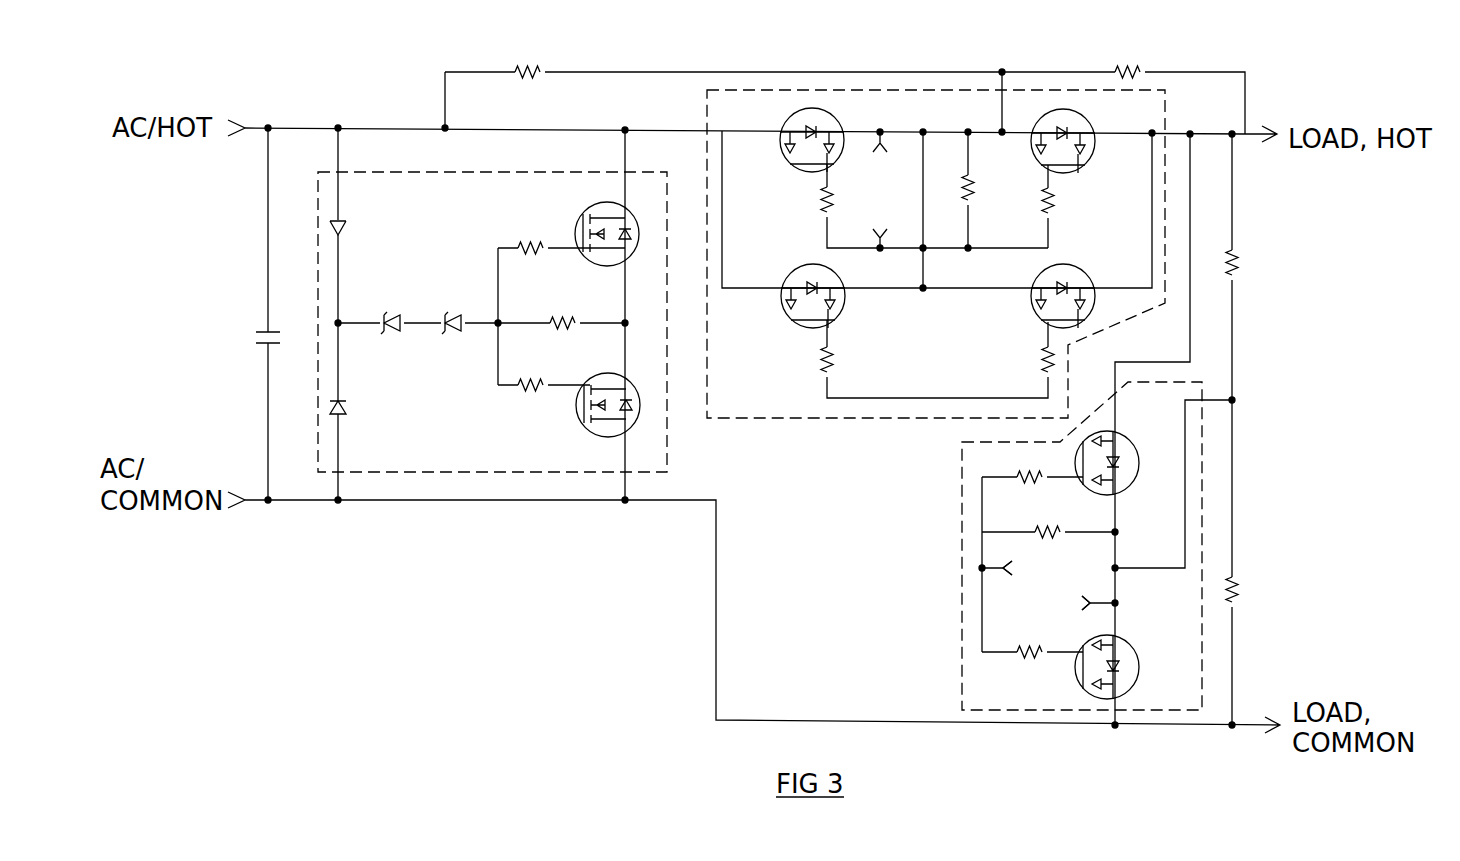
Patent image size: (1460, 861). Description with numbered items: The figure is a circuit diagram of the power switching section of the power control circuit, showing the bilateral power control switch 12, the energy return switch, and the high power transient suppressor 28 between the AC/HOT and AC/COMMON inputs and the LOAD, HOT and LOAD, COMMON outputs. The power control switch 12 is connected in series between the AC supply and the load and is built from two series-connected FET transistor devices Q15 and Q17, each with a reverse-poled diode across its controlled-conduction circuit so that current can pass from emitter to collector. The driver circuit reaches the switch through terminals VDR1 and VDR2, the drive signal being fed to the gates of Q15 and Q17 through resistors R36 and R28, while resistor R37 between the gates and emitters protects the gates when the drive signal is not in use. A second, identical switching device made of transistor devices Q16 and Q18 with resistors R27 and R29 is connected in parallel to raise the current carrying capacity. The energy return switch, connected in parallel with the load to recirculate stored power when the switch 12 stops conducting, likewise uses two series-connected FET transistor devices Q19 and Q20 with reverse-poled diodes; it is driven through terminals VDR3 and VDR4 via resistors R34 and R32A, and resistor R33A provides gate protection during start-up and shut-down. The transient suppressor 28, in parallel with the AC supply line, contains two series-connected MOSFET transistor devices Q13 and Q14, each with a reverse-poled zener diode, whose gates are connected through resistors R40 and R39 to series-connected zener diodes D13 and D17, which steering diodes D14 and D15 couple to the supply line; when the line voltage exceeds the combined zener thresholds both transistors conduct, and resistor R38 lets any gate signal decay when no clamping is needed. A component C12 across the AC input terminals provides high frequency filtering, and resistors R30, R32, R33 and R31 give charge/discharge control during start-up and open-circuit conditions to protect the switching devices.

The bilateral power control switch 12 is at (932, 90).
The high power transient suppressor 28 is at (455, 172).
The transistor (capacitor) C12 is at (242, 341).
The zenor diode D13 is at (395, 302).
The steering diode D14 is at (347, 408).
The steering diode D15 is at (347, 228).
The zenor diode D17 is at (455, 302).
The resistor R40 is at (531, 241).
The resistor R38 is at (565, 302).
The resistor R39 is at (545, 372).
The MOSFET transistor device Q13 is at (582, 224).
The MOSFET transistor device Q14 is at (586, 436).
The resistor R30 is at (536, 50).
The resistor R32 is at (1133, 52).
The FET transistor device Q15 is at (832, 112).
The FET transistor device Q16 is at (790, 281).
The FET transistor device Q17 is at (1085, 124).
The FET transistor device Q18 is at (1080, 274).
The terminal VDR1 is at (878, 159).
The terminal VDR2 is at (878, 221).
The terminal VDR3 is at (1049, 602).
The terminal VDR4 is at (1046, 568).
The resistor R36 is at (818, 202).
The resistor R37 is at (974, 191).
The resistor R28 is at (1055, 203).
The resistor R27 is at (818, 362).
The resistor R29 is at (1038, 362).
The resistor R33 is at (1241, 264).
The resistor R31 is at (1241, 592).
The resistor R34 is at (1037, 460).
The resistor R33A is at (1044, 516).
The resistor R32A is at (1031, 670).
The FET transistor device Q19 is at (1135, 478).
The FET transistor device Q20 is at (1132, 650).